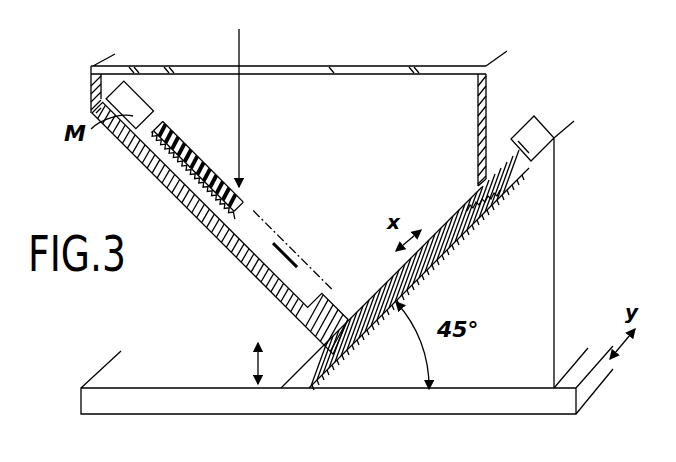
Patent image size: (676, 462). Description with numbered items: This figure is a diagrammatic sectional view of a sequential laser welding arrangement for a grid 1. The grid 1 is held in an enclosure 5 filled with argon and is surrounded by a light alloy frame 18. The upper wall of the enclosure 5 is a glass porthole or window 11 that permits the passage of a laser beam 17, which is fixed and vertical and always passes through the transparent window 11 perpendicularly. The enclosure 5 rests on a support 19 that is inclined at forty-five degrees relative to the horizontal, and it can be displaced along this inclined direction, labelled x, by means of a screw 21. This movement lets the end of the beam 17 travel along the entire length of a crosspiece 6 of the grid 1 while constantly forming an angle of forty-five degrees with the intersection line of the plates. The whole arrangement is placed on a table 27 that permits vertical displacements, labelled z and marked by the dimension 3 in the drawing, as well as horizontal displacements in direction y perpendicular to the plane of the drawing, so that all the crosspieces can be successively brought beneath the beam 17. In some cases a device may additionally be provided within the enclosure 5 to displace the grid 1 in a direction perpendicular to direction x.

The grid 1 is at (186, 140).
The vertical travel distance 3 is at (242, 364).
The enclosure 5 is at (135, 177).
The crosspiece 6 is at (246, 192).
The glass porthole or window 11 is at (433, 63).
The laser beam 17 is at (242, 42).
The light alloy frame 18 is at (258, 204).
The support 19 is at (443, 217).
The screw 21 is at (530, 127).
The table 27 is at (100, 380).